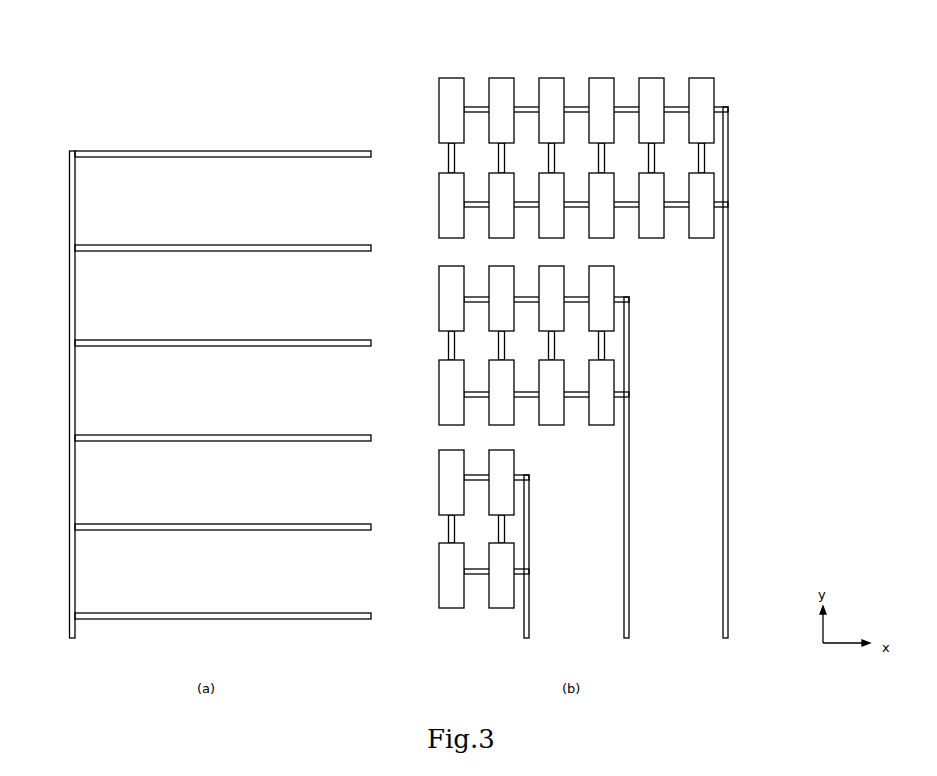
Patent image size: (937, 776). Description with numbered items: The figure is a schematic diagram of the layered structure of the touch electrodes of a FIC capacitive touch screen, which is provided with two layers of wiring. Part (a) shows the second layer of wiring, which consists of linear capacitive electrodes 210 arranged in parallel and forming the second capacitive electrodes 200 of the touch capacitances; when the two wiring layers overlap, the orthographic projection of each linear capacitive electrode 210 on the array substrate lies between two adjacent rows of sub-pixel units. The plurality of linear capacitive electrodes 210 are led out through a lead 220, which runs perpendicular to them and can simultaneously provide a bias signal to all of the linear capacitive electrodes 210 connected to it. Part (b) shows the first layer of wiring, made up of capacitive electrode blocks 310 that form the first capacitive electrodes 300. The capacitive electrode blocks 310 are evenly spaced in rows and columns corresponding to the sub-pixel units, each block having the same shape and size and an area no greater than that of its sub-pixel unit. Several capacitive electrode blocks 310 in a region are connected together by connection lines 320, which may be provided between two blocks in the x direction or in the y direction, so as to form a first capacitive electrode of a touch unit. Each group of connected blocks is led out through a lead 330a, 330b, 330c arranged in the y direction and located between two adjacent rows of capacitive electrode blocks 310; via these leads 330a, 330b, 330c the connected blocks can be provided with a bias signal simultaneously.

The second capacitive electrodes 200 is at (94, 100).
The linear capacitive electrodes 210 is at (286, 150).
The lead 220 is at (70, 462).
The first capacitive electrodes 300 is at (465, 49).
The capacitive electrode blocks 310 is at (698, 88).
The connection lines 320 is at (528, 105).
The lead 330a is at (726, 640).
The lead 330b is at (627, 640).
The lead 330c is at (527, 640).